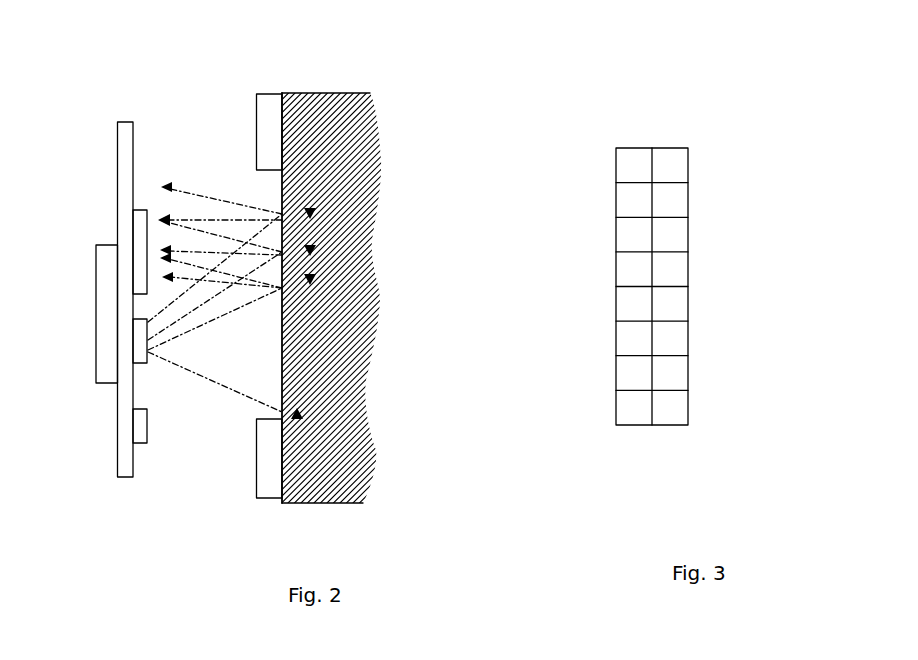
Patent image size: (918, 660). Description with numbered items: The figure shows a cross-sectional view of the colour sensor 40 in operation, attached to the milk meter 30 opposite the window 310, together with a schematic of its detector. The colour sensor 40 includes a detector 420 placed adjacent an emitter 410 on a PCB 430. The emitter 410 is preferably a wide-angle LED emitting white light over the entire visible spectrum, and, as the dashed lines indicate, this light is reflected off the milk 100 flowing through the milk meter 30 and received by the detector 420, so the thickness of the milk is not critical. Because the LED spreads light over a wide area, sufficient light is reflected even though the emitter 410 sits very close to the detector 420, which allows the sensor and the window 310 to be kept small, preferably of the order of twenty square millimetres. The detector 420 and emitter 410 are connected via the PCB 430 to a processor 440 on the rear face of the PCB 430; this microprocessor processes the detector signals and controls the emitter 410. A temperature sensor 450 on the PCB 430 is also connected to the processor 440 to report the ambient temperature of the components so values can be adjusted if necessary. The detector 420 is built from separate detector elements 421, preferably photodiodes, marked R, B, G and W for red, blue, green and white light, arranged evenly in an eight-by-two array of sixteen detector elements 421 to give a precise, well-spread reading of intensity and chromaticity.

In FIG. 2, the milk meter 30 is at (291, 329).
In FIG. 2, the colour sensor 40 is at (133, 333).
In FIG. 2, the milk 100 is at (318, 151).
In FIG. 2, the window 310 is at (282, 194).
In FIG. 2, the emitter 410 is at (147, 363).
In FIG. 2, the detector 420 is at (138, 210).
In FIG. 3, the detector 420 is at (639, 275).
In FIG. 3, the detector elements 421 is at (688, 243).
In FIG. 2, the PCB 430 is at (122, 123).
In FIG. 2, the processor 440 is at (96, 325).
In FIG. 2, the temperature sensor 450 is at (140, 444).